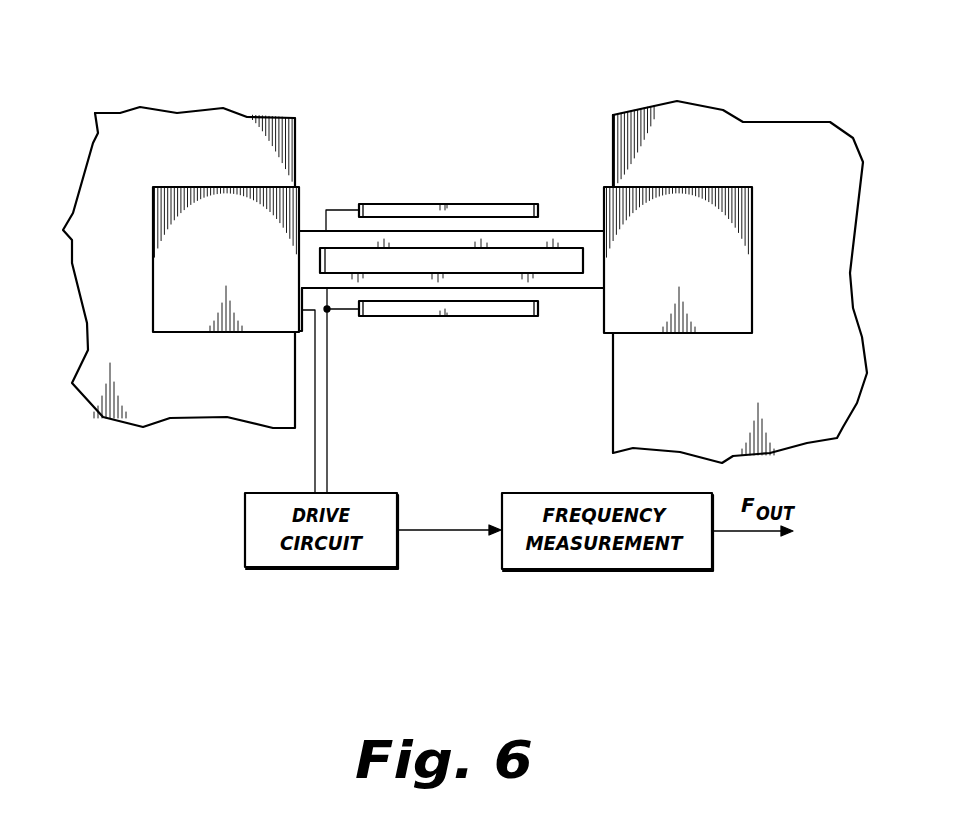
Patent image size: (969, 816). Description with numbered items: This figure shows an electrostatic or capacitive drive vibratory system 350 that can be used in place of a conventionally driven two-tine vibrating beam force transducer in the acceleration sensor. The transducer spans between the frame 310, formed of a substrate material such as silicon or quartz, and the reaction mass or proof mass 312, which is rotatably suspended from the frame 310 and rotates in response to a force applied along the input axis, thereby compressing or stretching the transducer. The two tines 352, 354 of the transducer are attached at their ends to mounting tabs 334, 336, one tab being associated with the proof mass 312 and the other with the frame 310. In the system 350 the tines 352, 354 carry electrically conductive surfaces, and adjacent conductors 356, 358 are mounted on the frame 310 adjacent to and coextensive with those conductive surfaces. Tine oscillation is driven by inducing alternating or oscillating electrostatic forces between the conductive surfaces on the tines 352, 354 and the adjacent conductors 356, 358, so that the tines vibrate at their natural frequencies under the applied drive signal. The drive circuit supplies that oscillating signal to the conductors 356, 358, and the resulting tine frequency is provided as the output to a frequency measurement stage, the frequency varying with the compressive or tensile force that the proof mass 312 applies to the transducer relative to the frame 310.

The frame 310 is at (778, 121).
The proof mass 312 is at (127, 108).
The mounting tab 334 is at (153, 295).
The mounting tab 336 is at (655, 187).
The electrostatic drive vibratory system 350 is at (393, 192).
The tine 352 is at (558, 230).
The tine 354 is at (563, 293).
The conductor 356 is at (510, 203).
The conductor 358 is at (477, 318).